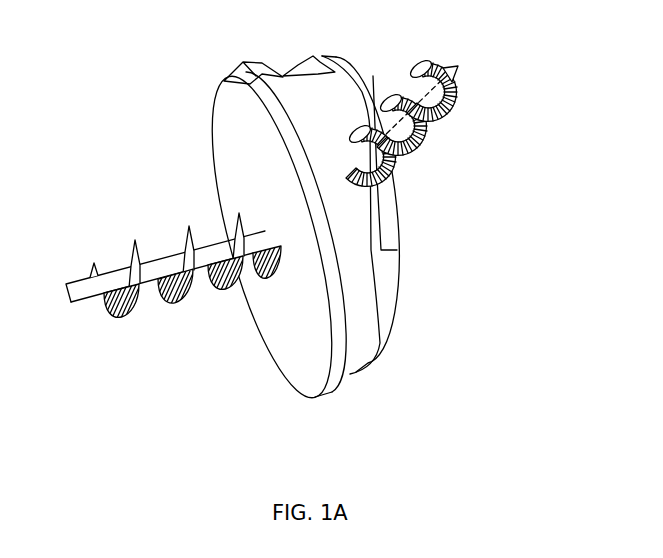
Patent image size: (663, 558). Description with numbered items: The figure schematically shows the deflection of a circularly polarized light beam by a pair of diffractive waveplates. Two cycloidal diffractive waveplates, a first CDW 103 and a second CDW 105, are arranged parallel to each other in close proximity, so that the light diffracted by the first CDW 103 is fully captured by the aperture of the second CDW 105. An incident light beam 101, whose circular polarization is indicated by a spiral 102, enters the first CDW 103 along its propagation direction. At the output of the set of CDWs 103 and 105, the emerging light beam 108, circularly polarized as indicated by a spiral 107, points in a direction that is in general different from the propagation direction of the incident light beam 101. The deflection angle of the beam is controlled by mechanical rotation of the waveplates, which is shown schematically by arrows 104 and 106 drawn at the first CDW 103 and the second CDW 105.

The incident light beam 101 is at (81, 294).
The spiral 102 is at (132, 315).
The first CDW 103 is at (310, 357).
The arrow 104 is at (226, 78).
The second CDW 105 is at (392, 338).
The arrow 106 is at (334, 68).
The spiral 107 is at (425, 153).
The light beam 108 is at (458, 80).